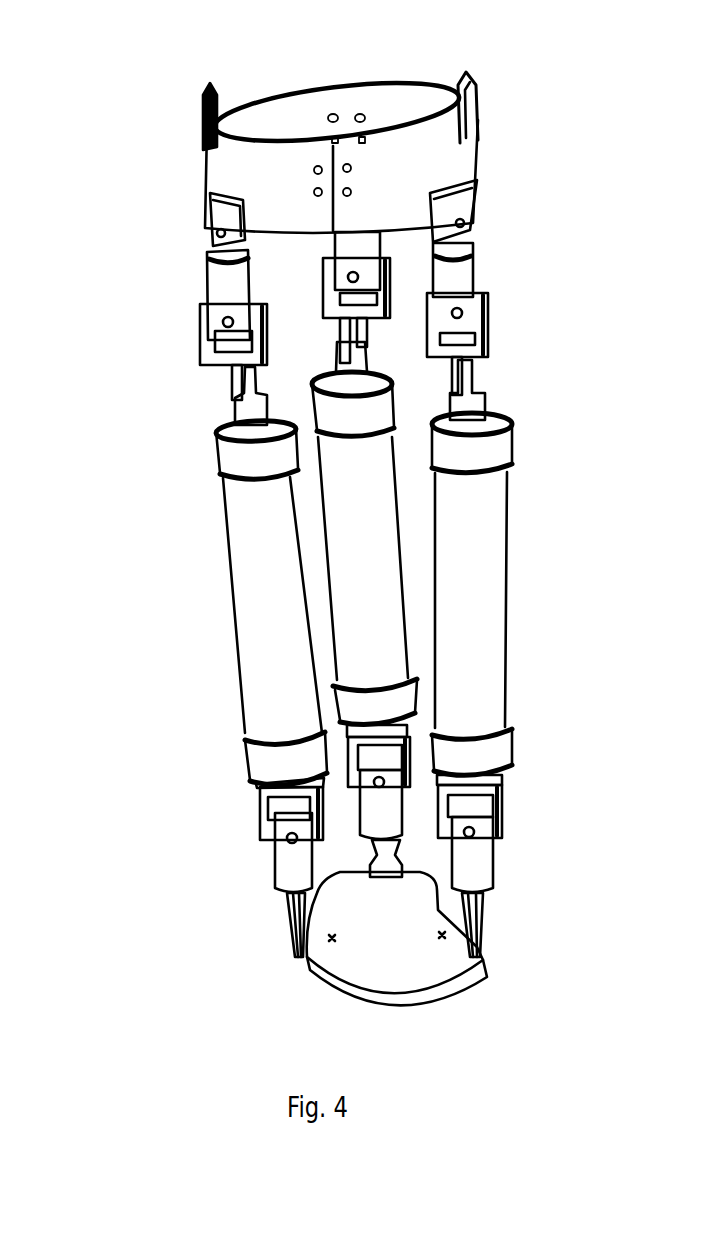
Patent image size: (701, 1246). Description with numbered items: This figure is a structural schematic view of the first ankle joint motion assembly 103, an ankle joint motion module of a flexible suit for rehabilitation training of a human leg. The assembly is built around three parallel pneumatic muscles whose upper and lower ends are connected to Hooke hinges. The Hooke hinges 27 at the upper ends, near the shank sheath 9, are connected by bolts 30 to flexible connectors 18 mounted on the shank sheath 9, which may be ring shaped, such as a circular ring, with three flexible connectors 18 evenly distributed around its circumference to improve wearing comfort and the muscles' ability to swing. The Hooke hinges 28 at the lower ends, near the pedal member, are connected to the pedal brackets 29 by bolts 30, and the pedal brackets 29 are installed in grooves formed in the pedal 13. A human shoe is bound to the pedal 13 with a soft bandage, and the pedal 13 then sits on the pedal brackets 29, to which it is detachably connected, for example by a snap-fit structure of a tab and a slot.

The first ankle joint motion assembly 103 is at (160, 104).
The shank sheath 9 is at (288, 122).
The flexible connectors 18 is at (222, 217).
The Hooke hinges 27 is at (230, 294).
The Hooke hinges 28 is at (260, 830).
The pedal brackets 29 is at (293, 947).
The bolts 30 is at (490, 902).
The pedal 13 is at (413, 965).